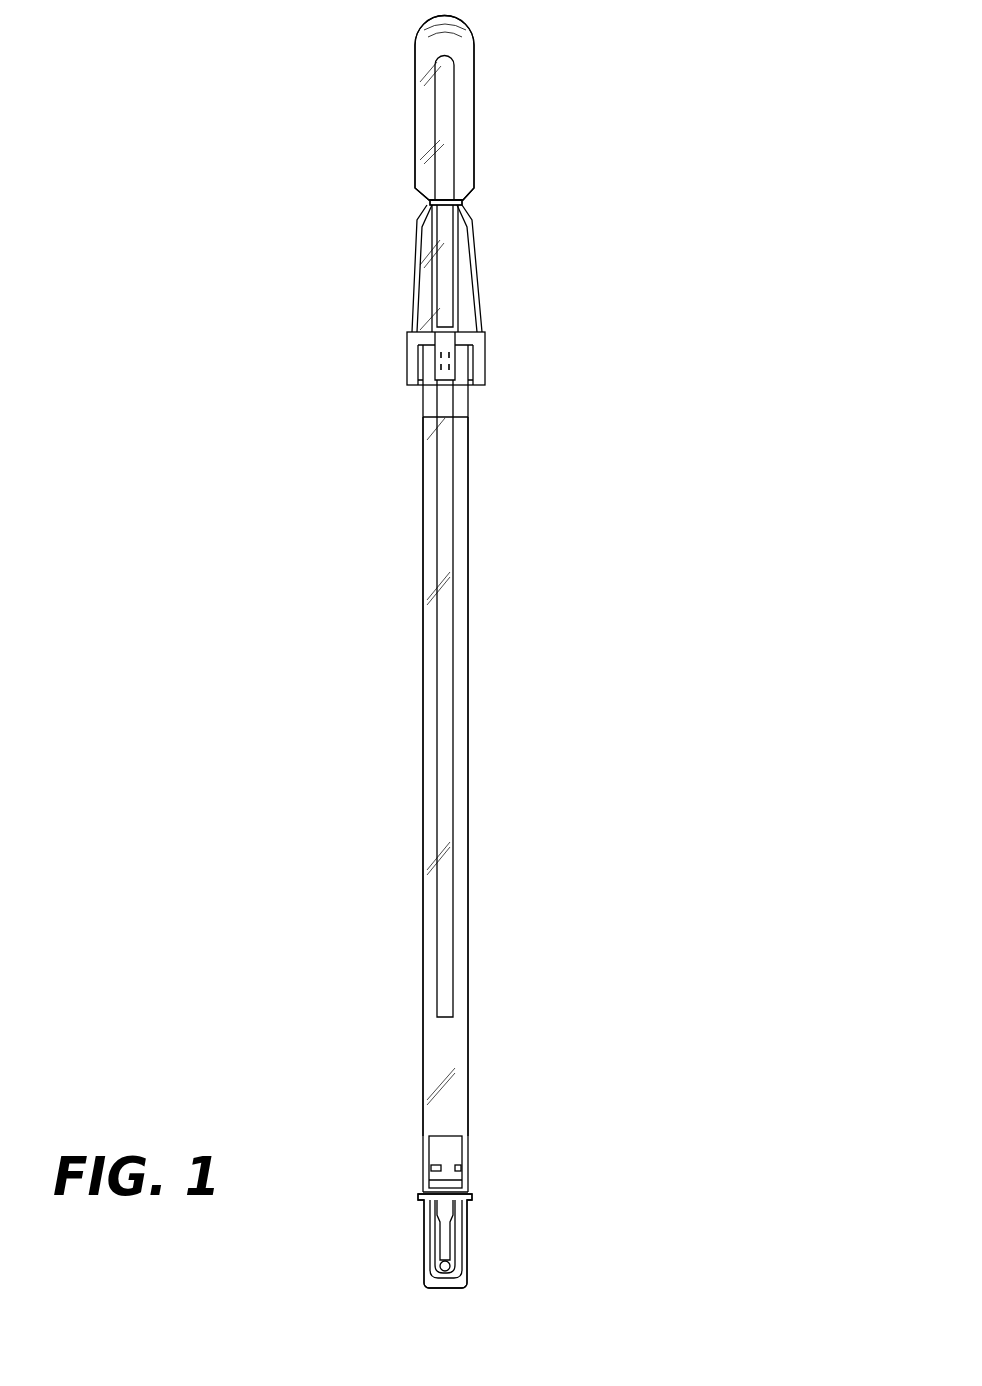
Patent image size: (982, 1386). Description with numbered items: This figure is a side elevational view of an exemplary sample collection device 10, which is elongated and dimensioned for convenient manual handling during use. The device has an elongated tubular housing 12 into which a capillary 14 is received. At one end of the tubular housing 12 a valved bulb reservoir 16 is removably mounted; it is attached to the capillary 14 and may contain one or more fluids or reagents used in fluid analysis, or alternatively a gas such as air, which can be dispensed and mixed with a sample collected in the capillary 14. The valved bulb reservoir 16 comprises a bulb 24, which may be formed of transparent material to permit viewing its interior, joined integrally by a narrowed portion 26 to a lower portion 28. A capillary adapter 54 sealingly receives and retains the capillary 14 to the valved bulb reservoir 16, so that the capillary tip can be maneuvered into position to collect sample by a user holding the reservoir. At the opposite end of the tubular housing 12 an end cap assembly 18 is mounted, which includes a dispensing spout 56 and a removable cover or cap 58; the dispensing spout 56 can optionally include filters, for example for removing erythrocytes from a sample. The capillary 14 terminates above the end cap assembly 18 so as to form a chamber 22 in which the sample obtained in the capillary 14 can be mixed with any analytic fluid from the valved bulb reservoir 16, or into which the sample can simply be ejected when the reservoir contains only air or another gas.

The sample collection device 10 is at (787, 128).
The elongated tubular housing 12 is at (469, 726).
The capillary 14 is at (447, 638).
The valved bulb reservoir 16 is at (348, 98).
The end cap assembly 18 is at (533, 1207).
The chamber 22 is at (452, 1046).
The bulb 24 is at (470, 43).
The narrowed portion 26 is at (462, 205).
The lower portion 28 is at (472, 270).
The capillary adapter 54 is at (480, 385).
The dispensing spout 56 is at (449, 1150).
The removable cover or cap 58 is at (468, 1273).